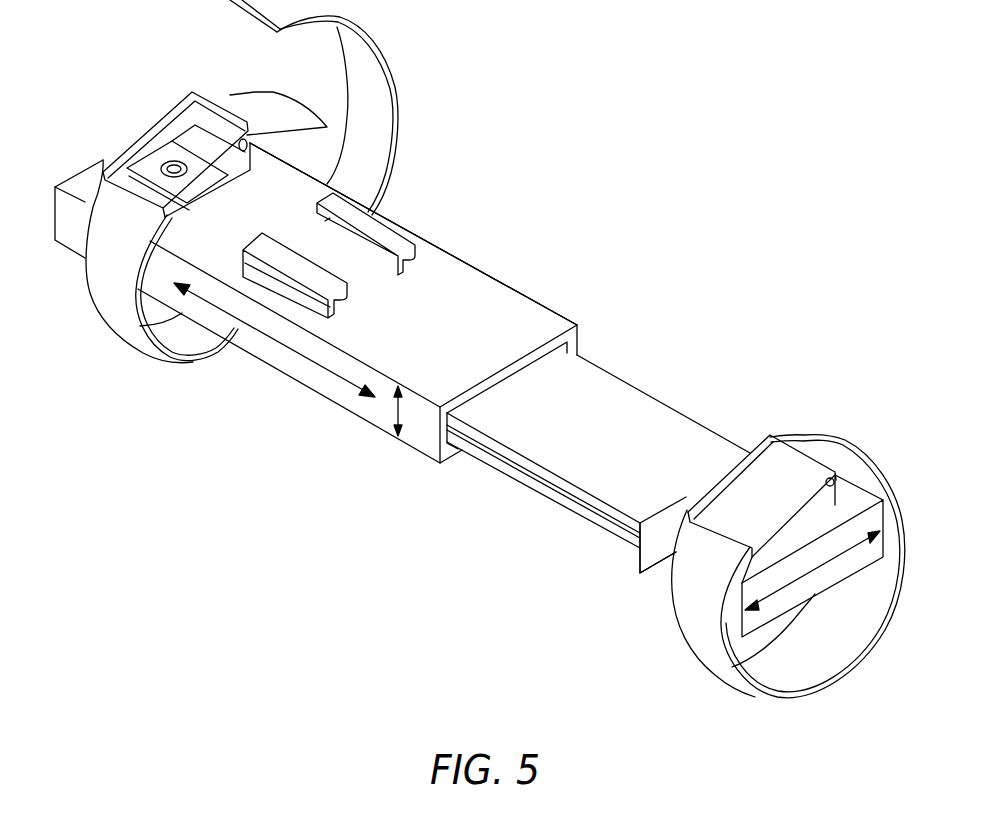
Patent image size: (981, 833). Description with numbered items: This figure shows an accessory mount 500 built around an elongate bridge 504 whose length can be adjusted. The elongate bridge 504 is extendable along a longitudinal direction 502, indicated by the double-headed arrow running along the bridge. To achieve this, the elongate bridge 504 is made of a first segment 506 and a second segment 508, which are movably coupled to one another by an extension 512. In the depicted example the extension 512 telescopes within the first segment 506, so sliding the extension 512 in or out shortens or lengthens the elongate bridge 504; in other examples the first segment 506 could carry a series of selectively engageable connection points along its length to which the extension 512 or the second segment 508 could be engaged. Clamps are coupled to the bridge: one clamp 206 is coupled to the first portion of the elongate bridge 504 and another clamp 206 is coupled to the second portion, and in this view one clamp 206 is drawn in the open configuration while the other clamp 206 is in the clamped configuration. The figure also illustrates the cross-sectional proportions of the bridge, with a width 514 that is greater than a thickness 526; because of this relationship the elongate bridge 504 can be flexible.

The accessory mount 500 is at (692, 132).
The clamp 206 is at (703, 671).
The longitudinal direction 502 is at (268, 340).
The elongate bridge 504 is at (489, 277).
The first segment 506 is at (441, 249).
The second segment 508 is at (660, 572).
The extension 512 is at (650, 410).
The width 514 is at (807, 571).
The thickness 526 is at (392, 410).